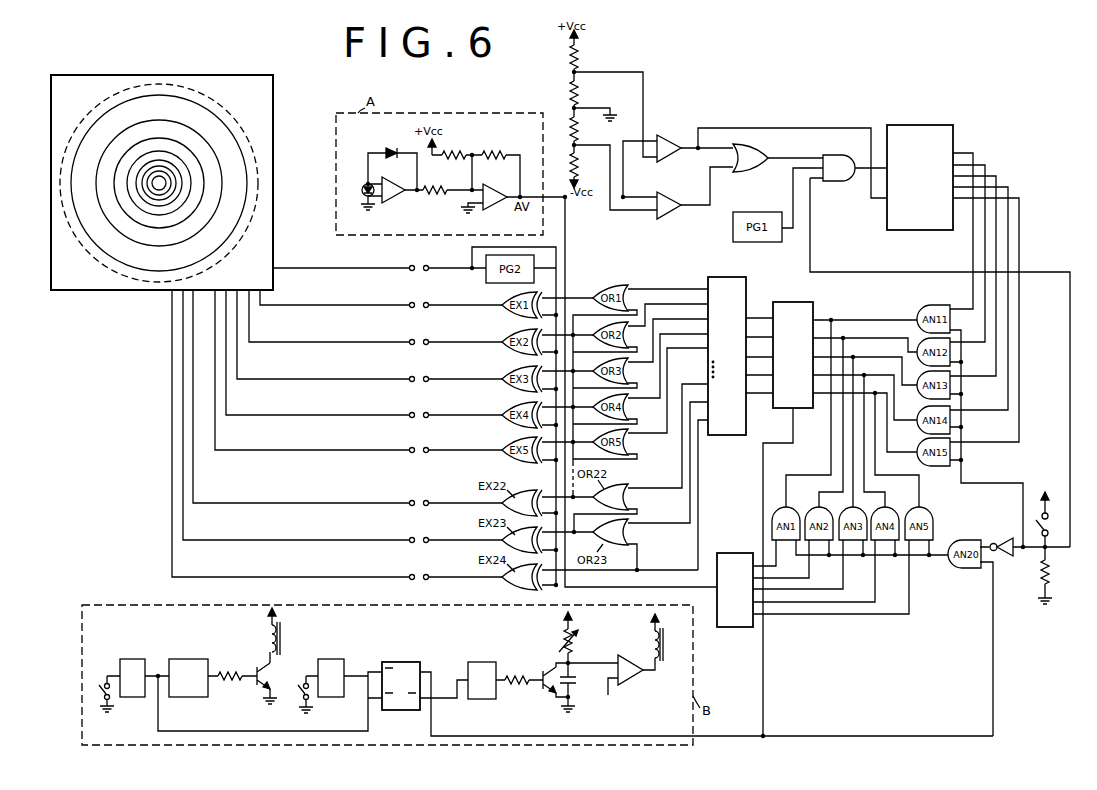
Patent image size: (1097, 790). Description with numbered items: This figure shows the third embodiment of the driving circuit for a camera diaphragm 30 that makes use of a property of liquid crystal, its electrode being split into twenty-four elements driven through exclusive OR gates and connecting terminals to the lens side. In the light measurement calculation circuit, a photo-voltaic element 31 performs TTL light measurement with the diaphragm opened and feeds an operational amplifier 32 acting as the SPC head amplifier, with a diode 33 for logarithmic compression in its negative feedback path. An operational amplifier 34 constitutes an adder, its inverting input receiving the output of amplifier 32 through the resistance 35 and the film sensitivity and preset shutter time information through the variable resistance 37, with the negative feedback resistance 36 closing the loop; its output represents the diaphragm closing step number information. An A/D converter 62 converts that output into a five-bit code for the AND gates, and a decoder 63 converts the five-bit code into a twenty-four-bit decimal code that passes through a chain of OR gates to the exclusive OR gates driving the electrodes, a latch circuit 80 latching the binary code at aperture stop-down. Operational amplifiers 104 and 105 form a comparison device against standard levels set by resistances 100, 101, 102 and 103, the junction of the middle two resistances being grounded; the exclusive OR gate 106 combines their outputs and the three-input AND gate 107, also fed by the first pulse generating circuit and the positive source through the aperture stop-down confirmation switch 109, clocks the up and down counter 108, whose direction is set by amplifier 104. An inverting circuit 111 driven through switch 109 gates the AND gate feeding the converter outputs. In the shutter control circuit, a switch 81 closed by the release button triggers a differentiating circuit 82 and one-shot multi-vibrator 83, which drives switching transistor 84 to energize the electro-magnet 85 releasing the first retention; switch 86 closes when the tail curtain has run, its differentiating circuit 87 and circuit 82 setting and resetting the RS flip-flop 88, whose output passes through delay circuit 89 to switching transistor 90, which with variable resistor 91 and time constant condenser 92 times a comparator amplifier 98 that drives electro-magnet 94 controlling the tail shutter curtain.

The diaphragm 30 is at (51, 262).
The photo-voltaic element 31 is at (362, 197).
The operational amplifier 32 is at (400, 194).
The diode 33 is at (391, 147).
The operational amplifier 34 is at (496, 205).
The resistance 35 is at (436, 200).
The negative feedback resistance 36 is at (495, 150).
The variable resistance 37 is at (455, 150).
The A/D converter 62 is at (729, 565).
The decoder 63 is at (727, 290).
The latch circuit 80 is at (792, 313).
The switch 81 is at (105, 698).
The differentiating circuit 82 is at (132, 678).
The one-shot multi-vibrator 83 is at (188, 678).
The switching transistor 84 is at (258, 689).
The electro-magnet 85 is at (284, 637).
The switch 86 is at (303, 694).
The differentiating circuit 87 is at (331, 678).
The RS flip-flop circuit 88 is at (396, 666).
The delay circuit 89 is at (482, 680).
The switching transistor 90 is at (538, 692).
The variable resistor 91 is at (577, 639).
The time constant condenser 92 is at (577, 681).
The electro-magnet 94 is at (665, 651).
The comparator 98 is at (632, 676).
The resistance 100 is at (580, 60).
The resistance 101 is at (580, 96).
The resistance 102 is at (580, 132).
The resistance 103 is at (580, 168).
The operational amplifier 104 is at (672, 146).
The operational amplifier 105 is at (672, 210).
The exclusive OR gate 106 is at (750, 158).
The AND gate 107 is at (839, 168).
The up and down counter 108 is at (925, 136).
The aperture stop-down confirmation switch 109 is at (1049, 523).
The inverting circuit 111 is at (1003, 554).